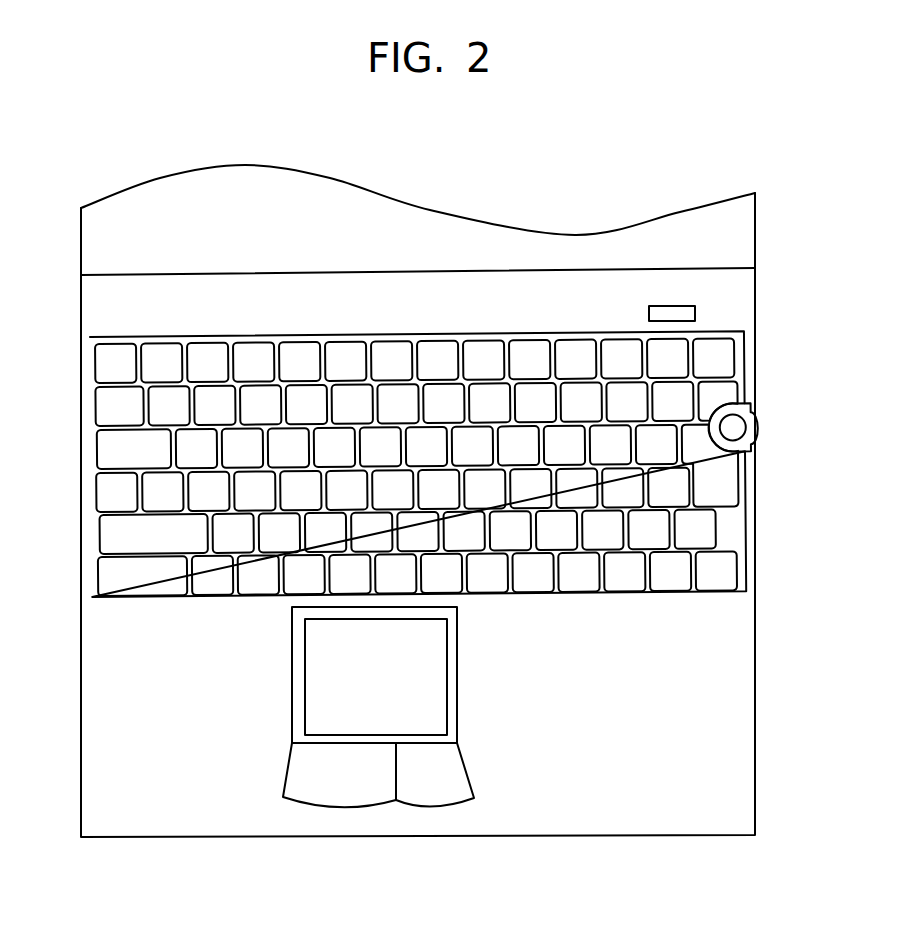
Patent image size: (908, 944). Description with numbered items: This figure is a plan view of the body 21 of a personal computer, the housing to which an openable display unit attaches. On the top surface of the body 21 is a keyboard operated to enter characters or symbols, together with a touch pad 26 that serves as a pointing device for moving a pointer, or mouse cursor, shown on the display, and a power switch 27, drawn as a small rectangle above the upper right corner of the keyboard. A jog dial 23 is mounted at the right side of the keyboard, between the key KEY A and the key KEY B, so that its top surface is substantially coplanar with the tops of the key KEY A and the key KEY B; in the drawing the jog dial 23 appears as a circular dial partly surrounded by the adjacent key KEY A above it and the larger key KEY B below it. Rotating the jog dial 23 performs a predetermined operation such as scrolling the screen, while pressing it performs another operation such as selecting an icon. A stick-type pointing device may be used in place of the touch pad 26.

The body 21 is at (755, 680).
The jog dial 23 is at (735, 428).
The touch pad 26 is at (357, 707).
The power switch 27 is at (683, 313).
The key A KEY A is at (715, 395).
The key B KEY B is at (720, 480).